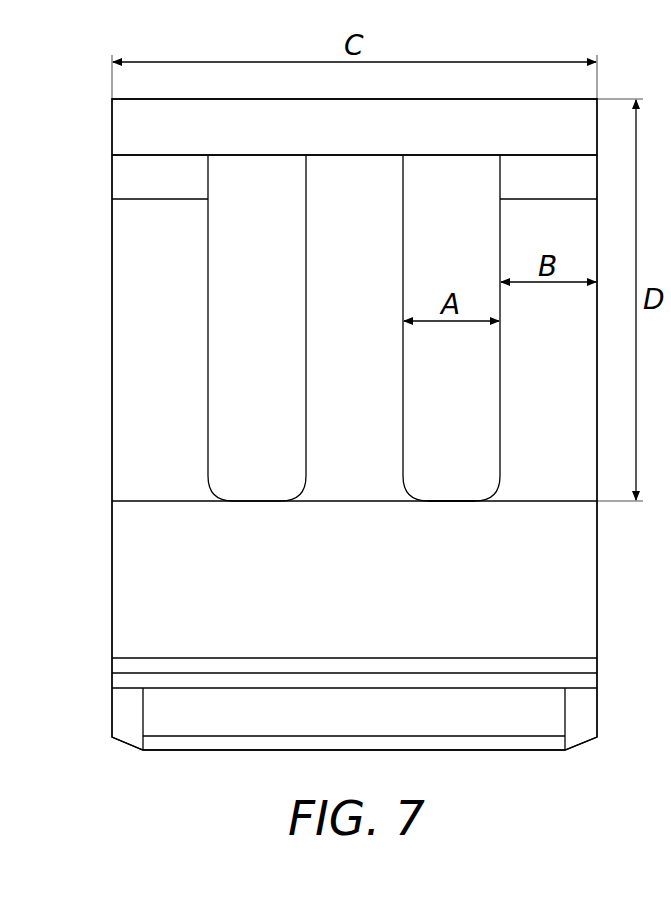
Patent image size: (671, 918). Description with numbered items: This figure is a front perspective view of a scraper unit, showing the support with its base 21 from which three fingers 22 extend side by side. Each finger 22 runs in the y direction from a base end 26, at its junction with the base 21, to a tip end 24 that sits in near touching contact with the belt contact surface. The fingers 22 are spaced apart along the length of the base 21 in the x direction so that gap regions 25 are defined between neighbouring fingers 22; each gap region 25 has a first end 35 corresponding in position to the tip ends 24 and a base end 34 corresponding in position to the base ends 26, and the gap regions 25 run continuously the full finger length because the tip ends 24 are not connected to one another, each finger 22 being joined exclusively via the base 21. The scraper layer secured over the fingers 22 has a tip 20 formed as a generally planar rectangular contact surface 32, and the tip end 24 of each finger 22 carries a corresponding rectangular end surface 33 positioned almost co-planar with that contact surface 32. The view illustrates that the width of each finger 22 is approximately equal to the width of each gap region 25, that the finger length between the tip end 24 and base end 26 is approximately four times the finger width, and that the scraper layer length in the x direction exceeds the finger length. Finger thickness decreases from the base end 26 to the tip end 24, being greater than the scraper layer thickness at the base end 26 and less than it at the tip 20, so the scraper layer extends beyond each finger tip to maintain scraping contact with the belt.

The tip 20 is at (112, 99).
The base 21 is at (588, 598).
The finger 22 is at (176, 404).
The tip end 24 is at (112, 155).
The gap region 25 is at (273, 404).
The base end 26 is at (553, 503).
The contact surface 32 is at (176, 138).
The end surface 33 is at (176, 188).
The base end 34 is at (455, 503).
The first end 35 is at (452, 169).